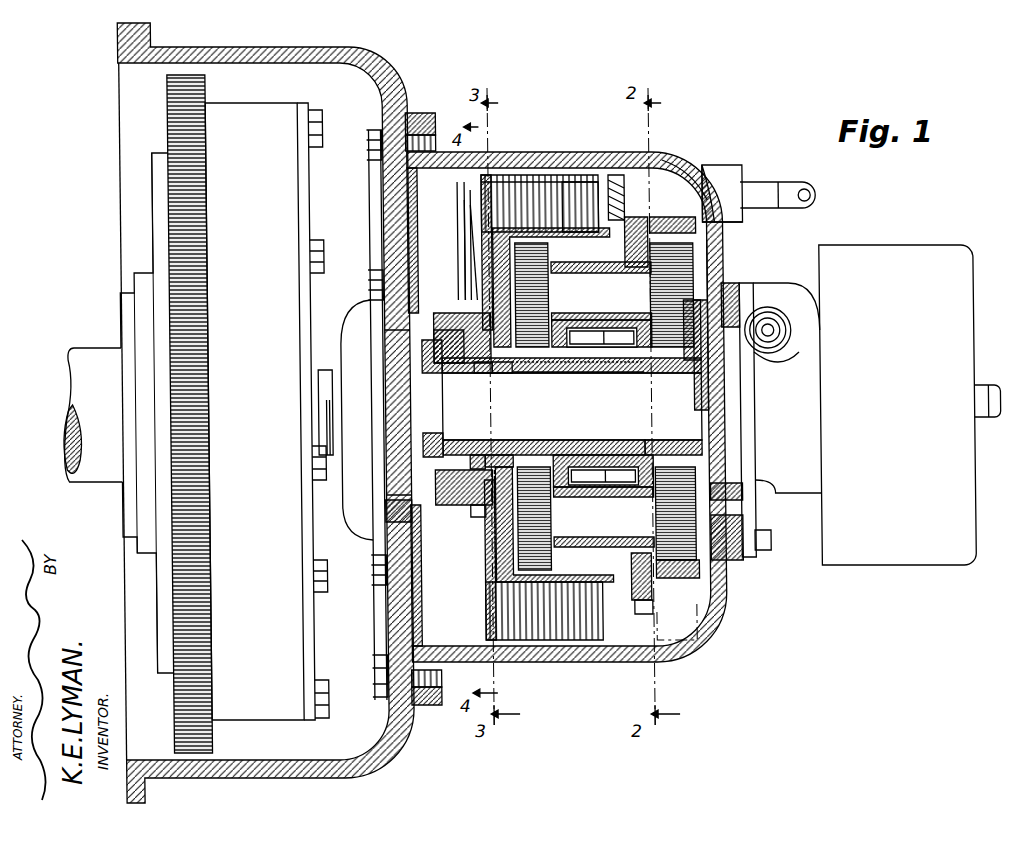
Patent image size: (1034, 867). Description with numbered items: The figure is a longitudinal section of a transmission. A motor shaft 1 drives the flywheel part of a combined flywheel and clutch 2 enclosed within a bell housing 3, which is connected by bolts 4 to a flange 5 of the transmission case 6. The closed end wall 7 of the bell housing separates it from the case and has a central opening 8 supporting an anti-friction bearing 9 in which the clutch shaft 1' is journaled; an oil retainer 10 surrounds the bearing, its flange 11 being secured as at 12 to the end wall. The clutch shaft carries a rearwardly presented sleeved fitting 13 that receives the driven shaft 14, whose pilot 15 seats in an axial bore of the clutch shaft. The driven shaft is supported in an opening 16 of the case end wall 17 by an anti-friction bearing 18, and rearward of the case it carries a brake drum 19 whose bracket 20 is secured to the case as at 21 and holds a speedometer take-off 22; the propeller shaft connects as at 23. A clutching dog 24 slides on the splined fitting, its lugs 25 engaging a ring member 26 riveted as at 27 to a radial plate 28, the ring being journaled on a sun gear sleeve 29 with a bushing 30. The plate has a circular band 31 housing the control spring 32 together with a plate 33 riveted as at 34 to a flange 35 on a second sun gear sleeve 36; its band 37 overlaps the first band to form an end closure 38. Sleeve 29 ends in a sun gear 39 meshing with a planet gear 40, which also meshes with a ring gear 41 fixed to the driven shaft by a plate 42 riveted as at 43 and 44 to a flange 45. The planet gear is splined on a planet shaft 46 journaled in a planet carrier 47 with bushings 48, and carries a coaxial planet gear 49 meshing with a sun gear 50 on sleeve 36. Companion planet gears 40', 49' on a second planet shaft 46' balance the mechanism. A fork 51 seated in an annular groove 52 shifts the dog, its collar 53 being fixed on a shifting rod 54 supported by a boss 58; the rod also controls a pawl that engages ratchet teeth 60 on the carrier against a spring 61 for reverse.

The motor shaft 1 is at (93, 400).
The clutch shaft 1' is at (299, 412).
The combined flywheel and clutch 2 is at (253, 115).
The bell housing 3 is at (297, 48).
The bolts 4 is at (392, 142).
The flange 5 is at (420, 122).
The transmission case 6 is at (535, 155).
The closed end wall 7 is at (386, 187).
The opening 8 is at (382, 510).
The anti-friction bearing 9 is at (382, 458).
The oil retainer 10 is at (345, 498).
The flange 11 is at (372, 366).
The bolting 12 is at (370, 290).
The sleeved fitting 13 is at (430, 344).
The driven shaft 14 is at (595, 426).
The pilot 15 is at (436, 400).
The opening 16 is at (735, 285).
The end wall 17 is at (722, 240).
The anti-friction bearing 18 is at (740, 398).
The brake drum 19 is at (920, 250).
The bracket 20 is at (792, 297).
The bolting 21 is at (760, 552).
The speedometer take-off 22 is at (780, 340).
The propeller shaft connection 23 is at (982, 388).
The clutching dog 24 is at (452, 490).
The projecting lugs 25 is at (450, 312).
The ring member 26 is at (480, 458).
The rivets 27 is at (472, 268).
The radial plate 28 is at (478, 247).
The sun gear sleeve 29 is at (615, 372).
The bushing 30 is at (550, 370).
The circular band 31 is at (560, 172).
The control spring 32 is at (585, 172).
The plate 33 is at (478, 563).
The rivets 34 is at (508, 525).
The flange 35 is at (485, 370).
The sun gear sleeve 36 is at (513, 370).
The circular band 37 is at (592, 240).
The end closure 38 is at (612, 175).
The sun gear 39 is at (680, 360).
The planet gear 40 is at (658, 282).
The companion planet gear 40' is at (658, 522).
The ring gear 41 is at (722, 193).
The plate 42 is at (718, 483).
The rivets 43 is at (728, 205).
The rivets 44 is at (700, 360).
The flange 45 is at (702, 423).
The planet shaft 46 is at (602, 335).
The planet shaft 46' is at (603, 514).
The planet carrier 47 is at (580, 497).
The bushings 48 is at (618, 273).
The planet gear 49 is at (542, 295).
The companion planet gear 49' is at (554, 524).
The sun gear 50 is at (515, 458).
The fork 51 is at (465, 226).
The annular groove 52 is at (478, 520).
The collar 53 is at (456, 186).
The shifting rod 54 is at (763, 180).
The boss 58 is at (698, 160).
The ratchet teeth 60 is at (636, 614).
The spring 61 is at (640, 220).